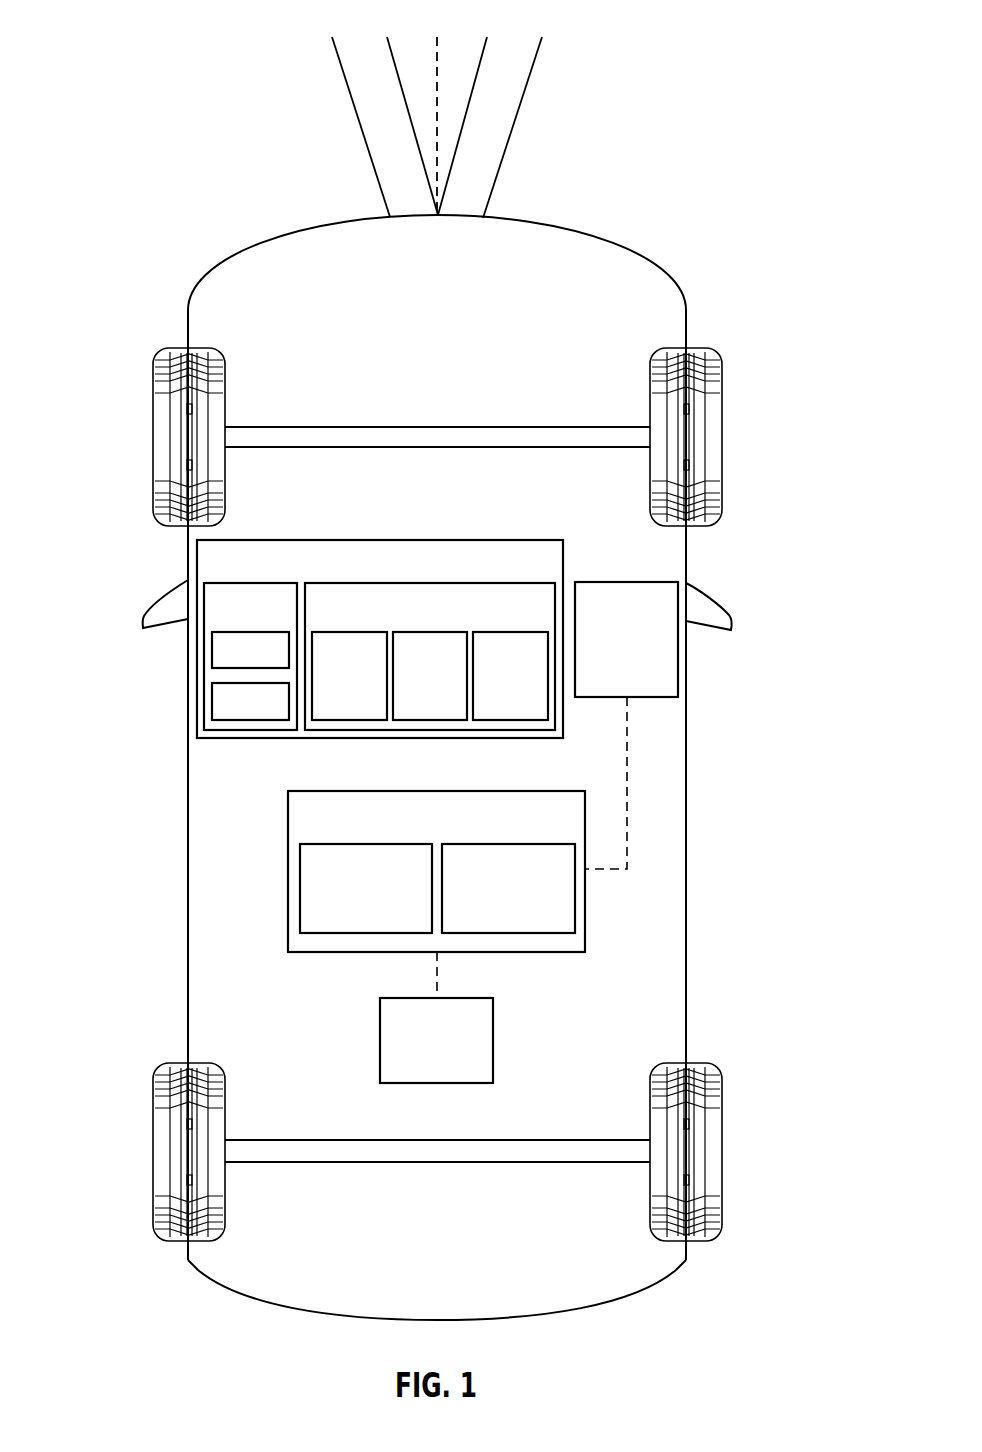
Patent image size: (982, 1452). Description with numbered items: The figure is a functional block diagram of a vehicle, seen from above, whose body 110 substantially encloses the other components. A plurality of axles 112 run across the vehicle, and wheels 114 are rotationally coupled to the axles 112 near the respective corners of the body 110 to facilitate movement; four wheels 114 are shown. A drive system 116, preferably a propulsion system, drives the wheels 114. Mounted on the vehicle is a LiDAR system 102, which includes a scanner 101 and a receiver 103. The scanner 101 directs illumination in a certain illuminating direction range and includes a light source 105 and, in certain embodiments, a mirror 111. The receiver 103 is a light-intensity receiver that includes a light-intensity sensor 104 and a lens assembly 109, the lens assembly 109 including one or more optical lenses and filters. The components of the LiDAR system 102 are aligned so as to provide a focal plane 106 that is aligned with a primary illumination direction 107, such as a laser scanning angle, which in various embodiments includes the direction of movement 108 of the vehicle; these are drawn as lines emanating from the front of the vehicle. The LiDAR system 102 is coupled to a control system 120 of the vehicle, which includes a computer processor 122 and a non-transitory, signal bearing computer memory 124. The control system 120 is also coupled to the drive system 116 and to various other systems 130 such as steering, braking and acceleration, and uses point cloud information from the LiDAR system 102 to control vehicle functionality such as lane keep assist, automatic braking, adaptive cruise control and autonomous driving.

The scanner 101 is at (430, 720).
The LiDAR system 102 is at (277, 583).
The receiver 103 is at (493, 583).
The light-intensity sensor 104 is at (350, 720).
The light source 105 is at (212, 650).
The focal plane 106 is at (405, 130).
The primary illumination direction 107 is at (433, 49).
The direction of movement 108 is at (437, 147).
The lens assembly 109 is at (510, 720).
The body 110 is at (188, 795).
The mirror 111 is at (212, 700).
The axle 112 is at (318, 416).
The wheel 114 is at (153, 440).
The drive system 116 is at (620, 581).
The control system 120 is at (545, 790).
The computer processor 122 is at (300, 888).
The computer memory 124 is at (575, 888).
The other vehicle systems 130 is at (462, 1083).